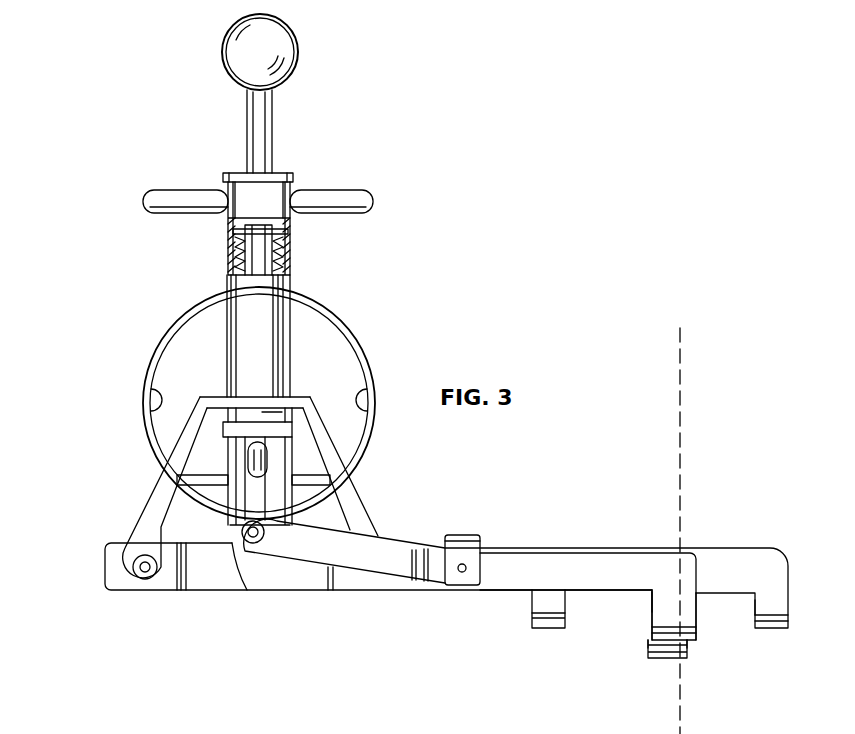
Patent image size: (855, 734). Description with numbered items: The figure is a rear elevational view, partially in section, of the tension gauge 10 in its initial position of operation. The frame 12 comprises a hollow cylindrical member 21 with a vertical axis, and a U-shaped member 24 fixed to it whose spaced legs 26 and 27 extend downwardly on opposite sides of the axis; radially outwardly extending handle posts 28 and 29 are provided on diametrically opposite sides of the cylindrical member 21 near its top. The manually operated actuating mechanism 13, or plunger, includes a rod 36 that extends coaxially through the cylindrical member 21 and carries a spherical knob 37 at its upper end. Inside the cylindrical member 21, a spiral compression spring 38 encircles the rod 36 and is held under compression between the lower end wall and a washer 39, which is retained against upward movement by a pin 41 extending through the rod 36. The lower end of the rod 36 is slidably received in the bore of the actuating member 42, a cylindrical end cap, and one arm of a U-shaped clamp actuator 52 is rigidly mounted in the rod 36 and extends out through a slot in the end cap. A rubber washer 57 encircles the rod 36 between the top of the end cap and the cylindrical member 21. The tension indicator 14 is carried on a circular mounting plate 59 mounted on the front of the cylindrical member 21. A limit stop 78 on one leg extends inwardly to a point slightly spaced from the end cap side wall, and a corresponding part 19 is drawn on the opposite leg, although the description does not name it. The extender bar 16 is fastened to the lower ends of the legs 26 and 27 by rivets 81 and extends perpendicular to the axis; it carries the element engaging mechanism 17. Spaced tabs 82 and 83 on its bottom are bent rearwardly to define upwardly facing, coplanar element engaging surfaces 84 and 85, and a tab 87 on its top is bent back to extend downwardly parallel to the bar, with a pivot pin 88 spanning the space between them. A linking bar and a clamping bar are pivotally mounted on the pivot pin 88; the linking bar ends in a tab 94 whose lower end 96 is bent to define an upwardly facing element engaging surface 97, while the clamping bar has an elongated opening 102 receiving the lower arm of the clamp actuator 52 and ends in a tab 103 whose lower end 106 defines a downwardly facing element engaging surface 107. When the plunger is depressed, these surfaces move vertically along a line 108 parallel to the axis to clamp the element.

The tension gauge 10 is at (510, 279).
The frame 12 is at (292, 272).
The manually operated actuating mechanism 13 is at (283, 112).
The tension indicator 14 is at (374, 333).
The extender bar 16 is at (222, 575).
The element engaging mechanism 17 is at (636, 502).
The left cross bar 19 is at (197, 478).
The hollow cylindrical member 21 is at (228, 268).
The U-shaped member 24 is at (188, 396).
The leg 26 is at (353, 505).
The leg 27 is at (150, 517).
The handle post 28 is at (336, 198).
The handle post 29 is at (172, 200).
The rod 36 is at (256, 143).
The spherical knob 37 is at (238, 45).
The spiral compression spring 38 is at (289, 255).
The washer 39 is at (288, 233).
The pin 41 is at (233, 231).
The actuating member 42 is at (238, 450).
The U-shaped clamp actuator 52 is at (262, 468).
The rubber washer 57 is at (268, 412).
The circular mounting plate 59 is at (180, 347).
The limit stop 78 is at (307, 480).
The rivets 81 is at (145, 580).
The tab 82 is at (548, 624).
The tab 83 is at (776, 625).
The element engaging surface 84 is at (538, 612).
The element engaging surface 85 is at (755, 618).
The tab 87 is at (463, 537).
The pivot pin 88 is at (461, 572).
The tab 94 is at (650, 614).
The lower end 96 is at (668, 657).
The element engaging surface 97 is at (647, 648).
The elongated opening 102 is at (247, 590).
The tab 103 is at (683, 580).
The lower end 106 is at (698, 632).
The element engaging surface 107 is at (690, 642).
The line 108 is at (682, 357).